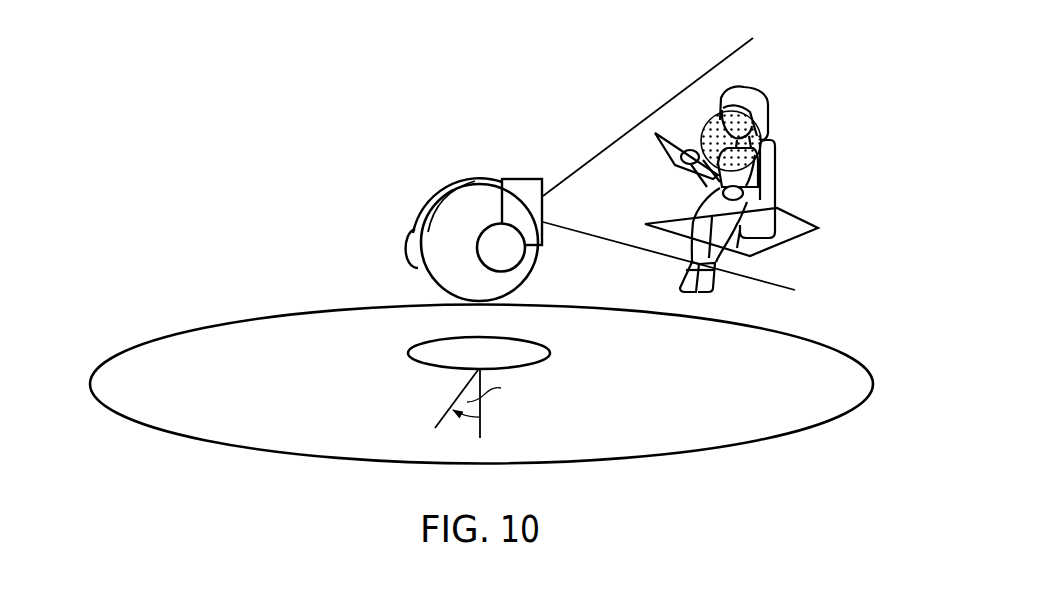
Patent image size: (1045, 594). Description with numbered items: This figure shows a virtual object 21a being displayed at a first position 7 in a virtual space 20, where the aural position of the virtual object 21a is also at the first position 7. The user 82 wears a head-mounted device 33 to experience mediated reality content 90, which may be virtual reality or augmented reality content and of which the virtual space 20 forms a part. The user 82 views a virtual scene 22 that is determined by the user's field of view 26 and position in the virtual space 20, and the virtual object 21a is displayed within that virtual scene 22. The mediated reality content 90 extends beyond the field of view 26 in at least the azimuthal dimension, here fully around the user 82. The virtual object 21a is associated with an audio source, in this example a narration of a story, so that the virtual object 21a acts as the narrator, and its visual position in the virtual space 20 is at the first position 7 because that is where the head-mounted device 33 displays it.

The virtual space 20 is at (445, 347).
The mediated reality content 90 is at (127, 285).
The user 82 is at (492, 201).
The head-mounted device 33 is at (527, 178).
The field of view 26 is at (613, 245).
The first position 7 is at (649, 102).
The virtual object 21a is at (698, 162).
The virtual scene 22 is at (827, 175).